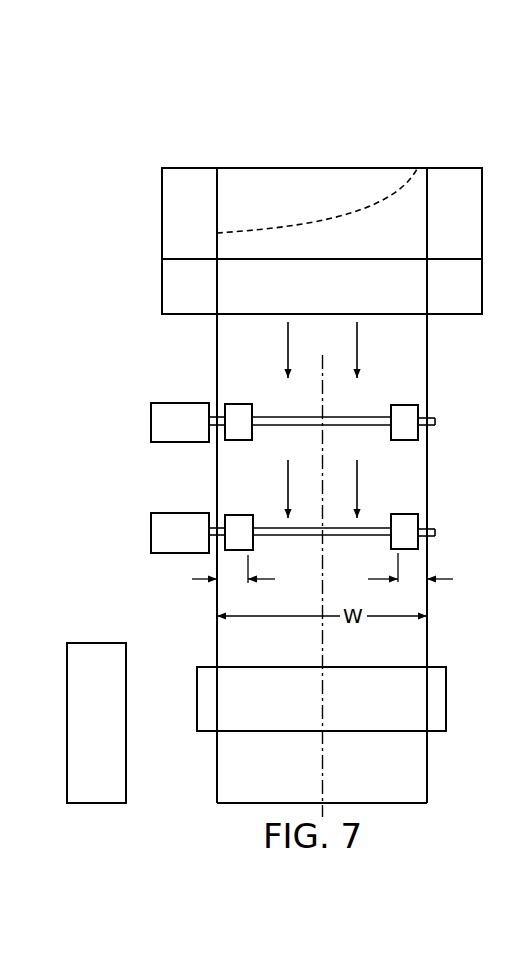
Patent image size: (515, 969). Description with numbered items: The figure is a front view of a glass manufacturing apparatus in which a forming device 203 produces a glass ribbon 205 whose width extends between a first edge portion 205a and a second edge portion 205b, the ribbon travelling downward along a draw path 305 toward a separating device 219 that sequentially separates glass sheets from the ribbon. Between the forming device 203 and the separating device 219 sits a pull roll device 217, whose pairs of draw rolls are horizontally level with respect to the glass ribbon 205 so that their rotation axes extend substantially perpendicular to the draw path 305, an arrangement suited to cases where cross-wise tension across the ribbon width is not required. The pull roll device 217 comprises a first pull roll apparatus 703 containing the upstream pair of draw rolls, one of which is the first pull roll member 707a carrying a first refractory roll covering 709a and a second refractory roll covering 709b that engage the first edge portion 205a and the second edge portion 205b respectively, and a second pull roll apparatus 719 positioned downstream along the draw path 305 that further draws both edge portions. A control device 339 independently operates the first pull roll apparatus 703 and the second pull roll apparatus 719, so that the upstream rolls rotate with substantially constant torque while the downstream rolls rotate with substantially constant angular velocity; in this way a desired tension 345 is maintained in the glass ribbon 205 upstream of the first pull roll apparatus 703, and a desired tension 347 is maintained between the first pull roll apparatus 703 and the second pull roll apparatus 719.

The forming device 203 is at (331, 193).
The glass ribbon 205 is at (415, 659).
The first edge portion 205a is at (235, 579).
The second edge portion 205b is at (410, 579).
The pull roll device 217 is at (113, 400).
The separating device 219 is at (446, 708).
The draw path 305 is at (322, 715).
The control device 339 is at (100, 643).
The tension 345 is at (288, 342).
The tension 347 is at (288, 482).
The first pull roll apparatus 703 is at (161, 375).
The first pull roll member 707a is at (337, 440).
The first refractory roll covering 709a is at (238, 404).
The second refractory roll covering 709b is at (418, 433).
The second pull roll apparatus 719 is at (167, 487).